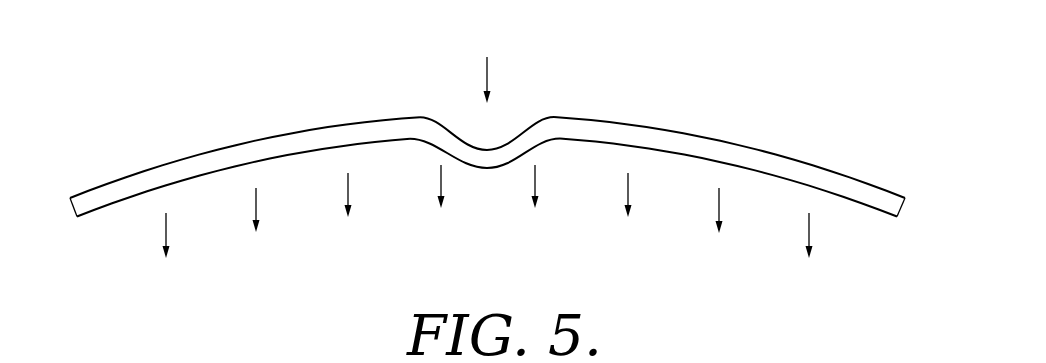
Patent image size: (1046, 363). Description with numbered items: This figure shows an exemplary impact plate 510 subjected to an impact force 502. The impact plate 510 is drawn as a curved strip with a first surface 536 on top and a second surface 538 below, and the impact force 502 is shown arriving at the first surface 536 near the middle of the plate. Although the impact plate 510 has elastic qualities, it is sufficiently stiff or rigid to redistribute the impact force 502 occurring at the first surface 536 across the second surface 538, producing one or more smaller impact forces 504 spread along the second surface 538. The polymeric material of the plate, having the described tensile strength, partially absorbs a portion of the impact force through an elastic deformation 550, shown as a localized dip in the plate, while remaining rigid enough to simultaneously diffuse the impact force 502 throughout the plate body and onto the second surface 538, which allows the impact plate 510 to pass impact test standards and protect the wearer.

The impact force 502 is at (486, 63).
The smaller impact forces 504 is at (486, 234).
The impact plate 510 is at (515, 187).
The first surface 536 is at (720, 140).
The second surface 538 is at (875, 209).
The elastic deformation 550 is at (483, 169).